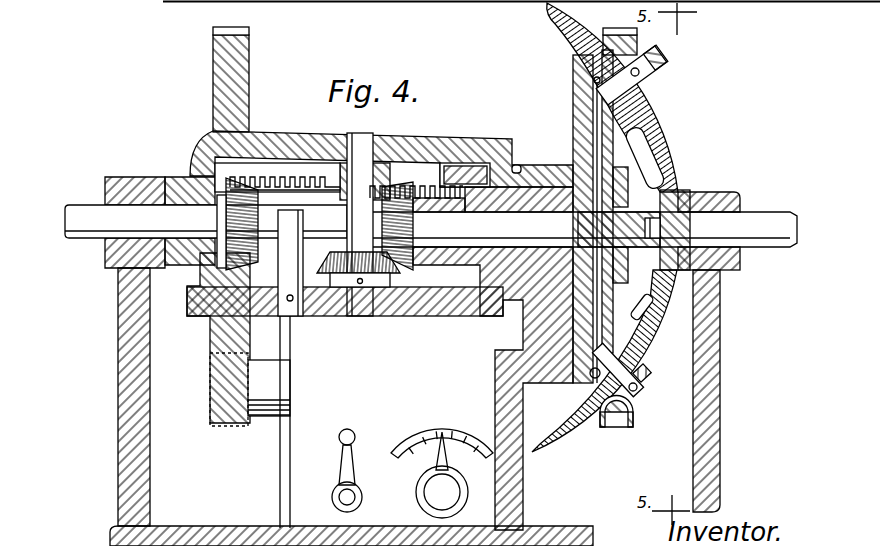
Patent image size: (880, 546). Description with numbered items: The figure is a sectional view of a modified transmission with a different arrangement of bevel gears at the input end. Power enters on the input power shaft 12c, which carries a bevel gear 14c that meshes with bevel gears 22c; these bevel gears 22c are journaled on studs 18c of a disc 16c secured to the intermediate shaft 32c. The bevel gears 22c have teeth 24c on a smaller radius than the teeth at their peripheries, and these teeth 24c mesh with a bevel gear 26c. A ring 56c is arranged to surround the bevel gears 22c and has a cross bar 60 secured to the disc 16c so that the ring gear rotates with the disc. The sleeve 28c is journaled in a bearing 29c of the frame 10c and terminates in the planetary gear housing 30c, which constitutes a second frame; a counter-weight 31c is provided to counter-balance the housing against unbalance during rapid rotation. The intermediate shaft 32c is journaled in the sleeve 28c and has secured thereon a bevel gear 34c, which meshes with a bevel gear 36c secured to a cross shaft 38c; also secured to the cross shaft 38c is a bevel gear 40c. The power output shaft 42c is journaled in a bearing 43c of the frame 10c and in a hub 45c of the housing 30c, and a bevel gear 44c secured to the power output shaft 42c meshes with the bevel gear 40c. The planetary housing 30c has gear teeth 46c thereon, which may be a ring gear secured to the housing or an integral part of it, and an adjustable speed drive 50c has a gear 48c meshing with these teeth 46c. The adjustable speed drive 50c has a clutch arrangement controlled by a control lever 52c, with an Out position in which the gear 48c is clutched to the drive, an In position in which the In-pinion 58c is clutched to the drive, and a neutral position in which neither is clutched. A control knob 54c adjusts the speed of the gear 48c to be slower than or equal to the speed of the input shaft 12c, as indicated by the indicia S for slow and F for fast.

The frame 10c is at (127, 390).
The input power shaft 12c is at (763, 226).
The bevel gear 14c is at (680, 191).
The disc 16c is at (605, 118).
The studs 18c is at (625, 82).
The bevel gears 22c is at (652, 124).
The teeth 24c is at (655, 143).
The bevel gear 26c is at (575, 83).
The sleeve 28c is at (549, 195).
The bearing 29c is at (515, 167).
The planetary gear housing 30c is at (420, 315).
The counter-weight 31c is at (290, 235).
The intermediate shaft 32c is at (556, 228).
The bevel gear 34c is at (417, 257).
The bevel gear 36c is at (400, 268).
The cross shaft 38c is at (362, 143).
The bevel gear 40c is at (278, 175).
The power output shaft 42c is at (83, 212).
The bearing 43c is at (135, 187).
The bevel gear 44c is at (243, 200).
The hub 45c is at (177, 187).
The gear teeth 46c is at (235, 73).
The gear 48c is at (213, 394).
The adjustable speed drive 50c is at (410, 367).
The control lever 52c is at (343, 470).
The control knob 54c is at (430, 475).
The ring 56c is at (618, 410).
The In-pinion 58c is at (634, 417).
The cross bar 60 is at (632, 183).